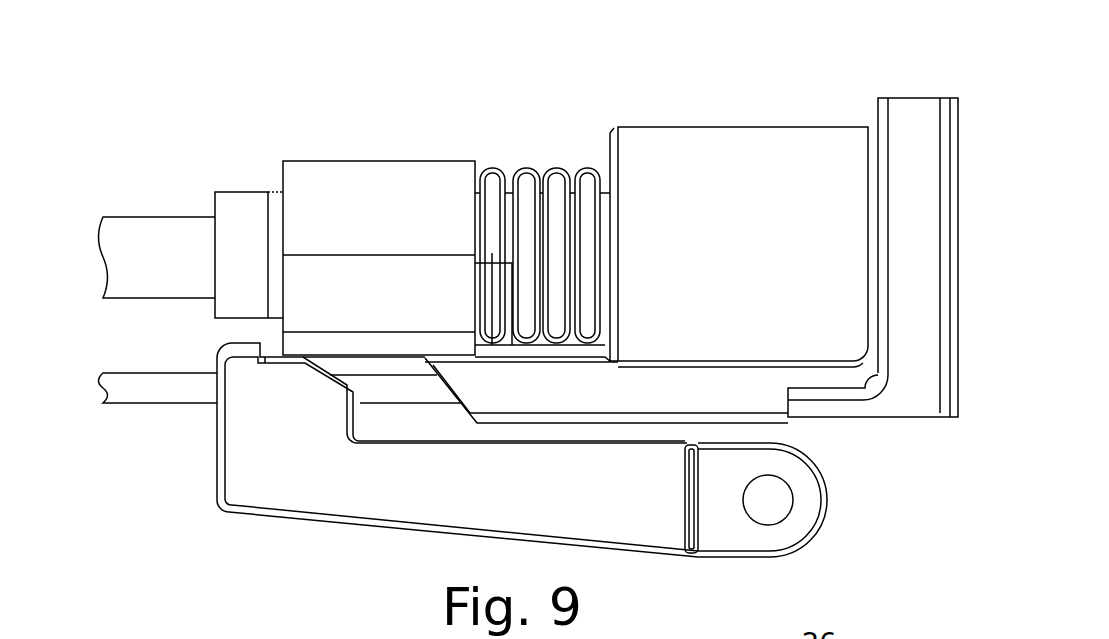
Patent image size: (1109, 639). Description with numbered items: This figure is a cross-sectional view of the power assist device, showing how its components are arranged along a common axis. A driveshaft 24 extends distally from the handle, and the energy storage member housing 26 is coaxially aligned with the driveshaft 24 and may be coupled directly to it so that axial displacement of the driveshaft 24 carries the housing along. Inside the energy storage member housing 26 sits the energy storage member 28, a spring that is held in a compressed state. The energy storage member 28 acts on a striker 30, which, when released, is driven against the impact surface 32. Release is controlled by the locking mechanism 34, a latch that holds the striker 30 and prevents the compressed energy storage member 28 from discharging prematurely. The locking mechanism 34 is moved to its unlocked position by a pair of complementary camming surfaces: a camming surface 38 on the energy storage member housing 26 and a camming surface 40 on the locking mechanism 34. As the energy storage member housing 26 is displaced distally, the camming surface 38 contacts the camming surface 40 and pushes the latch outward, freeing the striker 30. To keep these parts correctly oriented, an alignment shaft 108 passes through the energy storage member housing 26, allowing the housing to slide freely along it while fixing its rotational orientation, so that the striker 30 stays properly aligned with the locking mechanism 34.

The driveshaft 24 is at (137, 228).
The impact surface 32 is at (233, 220).
The striker 30 is at (357, 185).
The energy storage member 28 is at (532, 175).
The energy storage member housing 26 is at (740, 155).
The locking mechanism 34 is at (297, 442).
The alignment shaft 108 is at (195, 387).
The camming surface 38 is at (470, 413).
The camming surface 40 is at (348, 388).